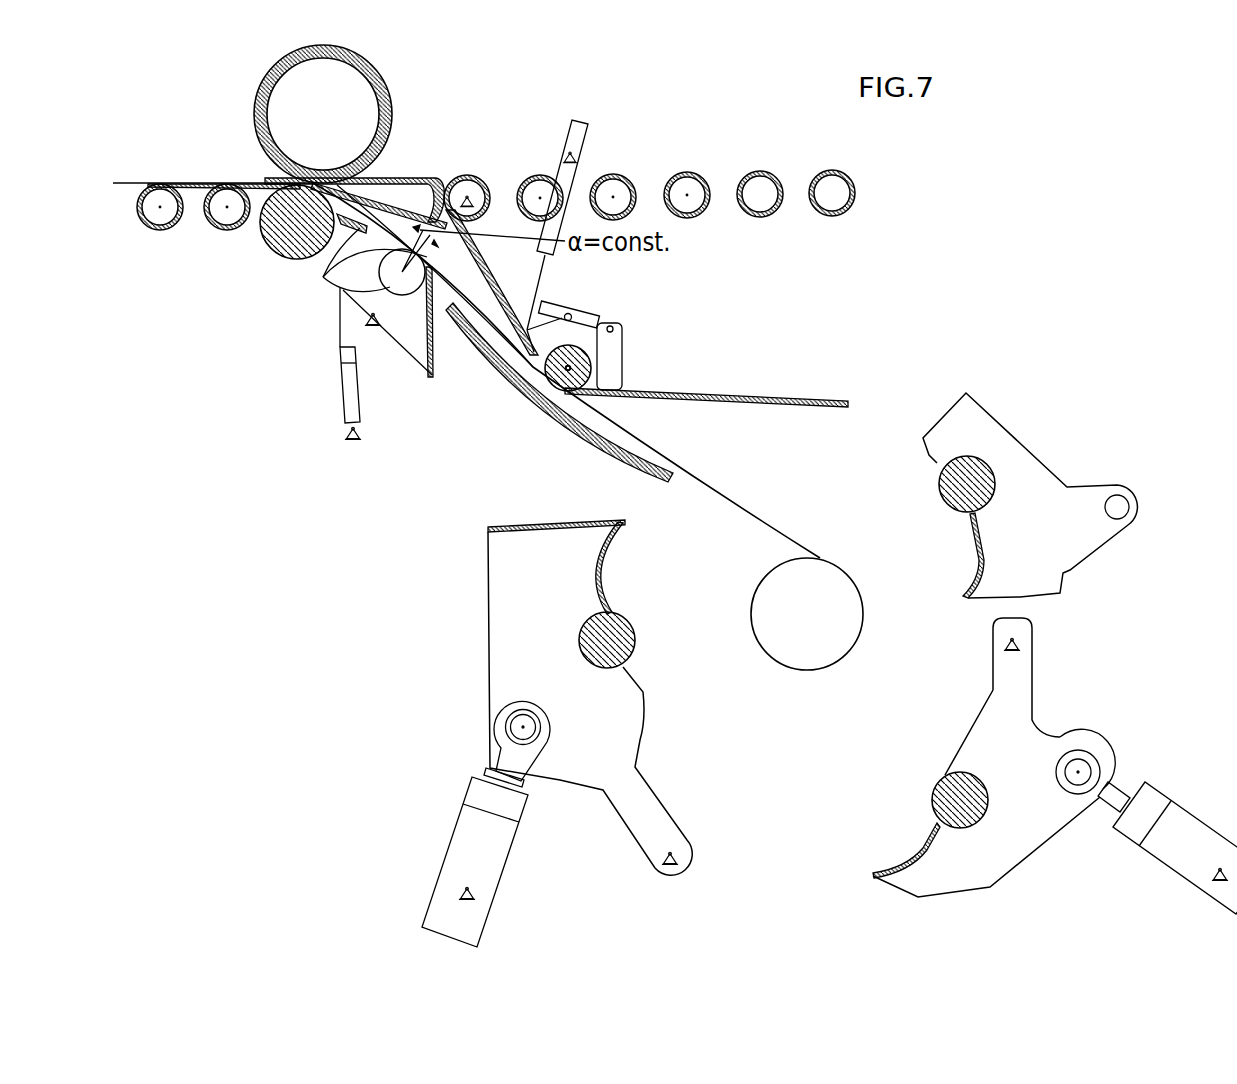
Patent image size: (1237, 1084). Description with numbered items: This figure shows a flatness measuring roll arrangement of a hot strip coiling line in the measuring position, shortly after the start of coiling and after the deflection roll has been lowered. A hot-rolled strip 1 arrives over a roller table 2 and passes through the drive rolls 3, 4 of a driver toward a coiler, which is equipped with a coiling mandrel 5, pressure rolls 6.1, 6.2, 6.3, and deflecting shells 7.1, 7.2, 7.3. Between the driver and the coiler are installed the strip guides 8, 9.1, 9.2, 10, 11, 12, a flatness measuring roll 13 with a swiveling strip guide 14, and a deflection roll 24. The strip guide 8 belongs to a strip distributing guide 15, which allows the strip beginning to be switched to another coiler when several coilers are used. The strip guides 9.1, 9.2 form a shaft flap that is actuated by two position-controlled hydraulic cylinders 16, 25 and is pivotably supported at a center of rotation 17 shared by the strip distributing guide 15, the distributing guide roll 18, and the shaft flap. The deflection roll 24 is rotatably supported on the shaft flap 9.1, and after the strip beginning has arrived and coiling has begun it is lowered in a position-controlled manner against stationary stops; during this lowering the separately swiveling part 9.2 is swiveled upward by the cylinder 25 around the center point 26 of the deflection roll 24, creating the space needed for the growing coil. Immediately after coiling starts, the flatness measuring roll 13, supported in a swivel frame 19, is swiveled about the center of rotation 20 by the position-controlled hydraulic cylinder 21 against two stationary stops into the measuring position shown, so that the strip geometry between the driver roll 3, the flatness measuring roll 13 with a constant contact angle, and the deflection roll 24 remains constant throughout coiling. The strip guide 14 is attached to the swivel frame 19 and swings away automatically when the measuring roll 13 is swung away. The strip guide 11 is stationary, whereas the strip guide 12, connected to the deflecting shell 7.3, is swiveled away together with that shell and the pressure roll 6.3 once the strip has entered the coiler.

The hot-rolled strip 1 is at (120, 183).
The roller table 2 is at (170, 232).
The drive roll 3 is at (278, 243).
The drive roll 4 is at (385, 83).
The coiling mandrel 5 is at (783, 647).
The pressure roll 6.1 is at (955, 490).
The pressure roll 6.2 is at (932, 793).
The pressure roll 6.3 is at (595, 642).
The deflecting shell 7.1 is at (982, 562).
The deflecting shell 7.2 is at (922, 850).
The deflecting shell 7.3 is at (597, 572).
The strip guide 8 is at (400, 205).
The shaft flap 9.1 is at (497, 280).
The shaft flap 9.2 is at (715, 393).
The strip guide 10 is at (327, 260).
The strip guide 11 is at (600, 440).
The strip guide 12 is at (563, 517).
The flatness measuring roll 13 is at (390, 280).
The swiveling strip guide 14 is at (433, 345).
The strip distributing guide 15 is at (420, 197).
The position-controlled hydraulic cylinder 16 is at (588, 127).
The center of rotation 17 is at (467, 183).
The distributing guide roll 18 is at (492, 190).
The swivel frame 19 is at (410, 340).
The center of rotation 20 is at (375, 328).
The position-controlled hydraulic cylinder 21 is at (343, 368).
The deflection roll 24 is at (578, 367).
The position-controlled hydraulic cylinder 25 is at (583, 313).
The center point of the deflecting roll 26 is at (565, 378).